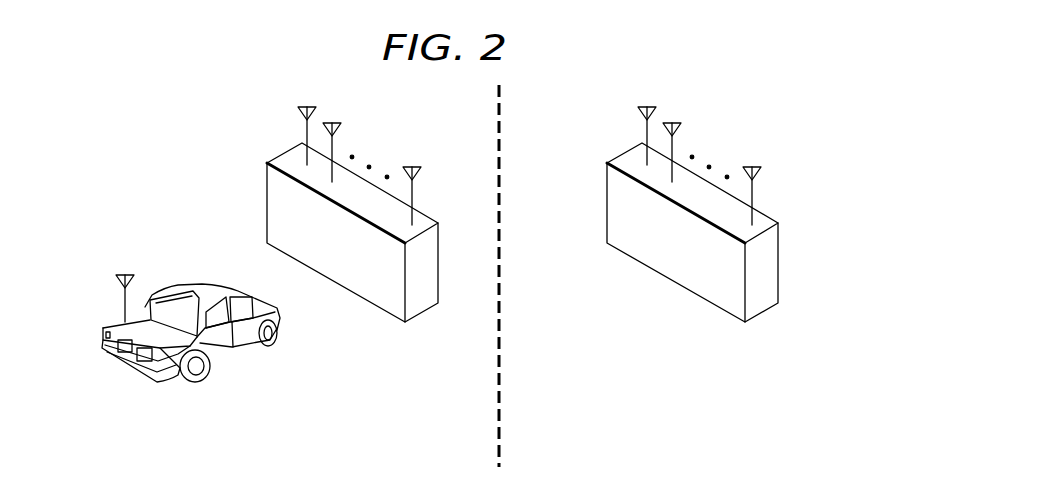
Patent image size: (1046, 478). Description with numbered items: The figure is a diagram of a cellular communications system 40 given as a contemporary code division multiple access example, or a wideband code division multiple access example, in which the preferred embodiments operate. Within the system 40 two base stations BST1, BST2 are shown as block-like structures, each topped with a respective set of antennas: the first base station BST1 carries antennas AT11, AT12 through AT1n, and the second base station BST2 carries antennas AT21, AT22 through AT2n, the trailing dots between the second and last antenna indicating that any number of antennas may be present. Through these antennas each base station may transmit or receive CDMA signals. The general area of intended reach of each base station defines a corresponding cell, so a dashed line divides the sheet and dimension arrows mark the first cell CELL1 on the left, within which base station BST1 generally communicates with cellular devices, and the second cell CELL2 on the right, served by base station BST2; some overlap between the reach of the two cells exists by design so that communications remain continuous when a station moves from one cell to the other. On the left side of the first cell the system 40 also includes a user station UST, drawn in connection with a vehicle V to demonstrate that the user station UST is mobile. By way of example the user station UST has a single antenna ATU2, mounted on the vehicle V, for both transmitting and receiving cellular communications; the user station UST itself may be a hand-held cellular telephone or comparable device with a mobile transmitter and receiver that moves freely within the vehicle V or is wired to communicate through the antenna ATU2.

The cellular communications system 40 is at (205, 93).
The base station BST1 is at (349, 263).
The base station BST2 is at (689, 263).
The antenna AT11 is at (305, 135).
The antenna AT12 is at (334, 143).
The antenna AT1n is at (414, 188).
The antenna AT21 is at (645, 135).
The antenna AT22 is at (674, 143).
The antenna AT2n is at (754, 188).
The vehicle V is at (198, 288).
The user station UST is at (167, 327).
The antenna ATU2 is at (94, 298).
The Cell 1 CELL1 is at (493, 447).
The Cell 2 CELL2 is at (845, 437).